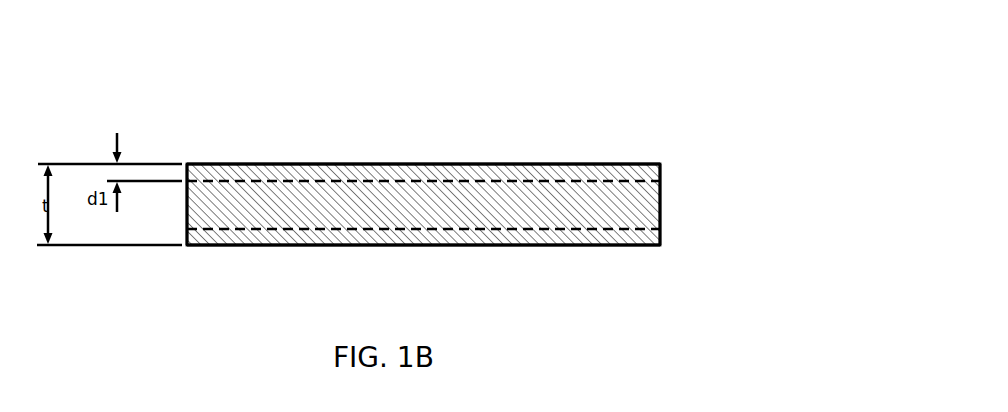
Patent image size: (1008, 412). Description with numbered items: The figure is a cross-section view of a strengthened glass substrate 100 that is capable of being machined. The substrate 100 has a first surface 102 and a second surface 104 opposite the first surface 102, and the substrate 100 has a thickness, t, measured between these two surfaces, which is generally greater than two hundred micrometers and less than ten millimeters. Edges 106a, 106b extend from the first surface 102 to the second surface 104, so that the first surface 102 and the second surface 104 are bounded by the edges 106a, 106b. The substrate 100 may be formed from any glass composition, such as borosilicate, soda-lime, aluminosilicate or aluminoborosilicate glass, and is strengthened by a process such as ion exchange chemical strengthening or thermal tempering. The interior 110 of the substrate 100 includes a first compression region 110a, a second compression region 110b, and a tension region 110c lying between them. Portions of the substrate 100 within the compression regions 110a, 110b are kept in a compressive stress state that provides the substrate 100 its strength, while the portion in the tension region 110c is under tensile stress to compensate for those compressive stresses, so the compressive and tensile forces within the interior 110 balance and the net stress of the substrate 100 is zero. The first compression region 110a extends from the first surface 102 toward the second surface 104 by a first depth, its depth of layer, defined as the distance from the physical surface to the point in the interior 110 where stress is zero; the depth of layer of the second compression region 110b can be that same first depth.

The strengthened glass substrate 100 is at (208, 73).
The first surface 102 is at (424, 157).
The second surface 104 is at (412, 253).
The edge 106a is at (179, 229).
The edge 106b is at (669, 211).
The interior 110 is at (593, 66).
The first compression region 110a is at (615, 170).
The second compression region 110b is at (563, 231).
The tension region 110c is at (517, 195).